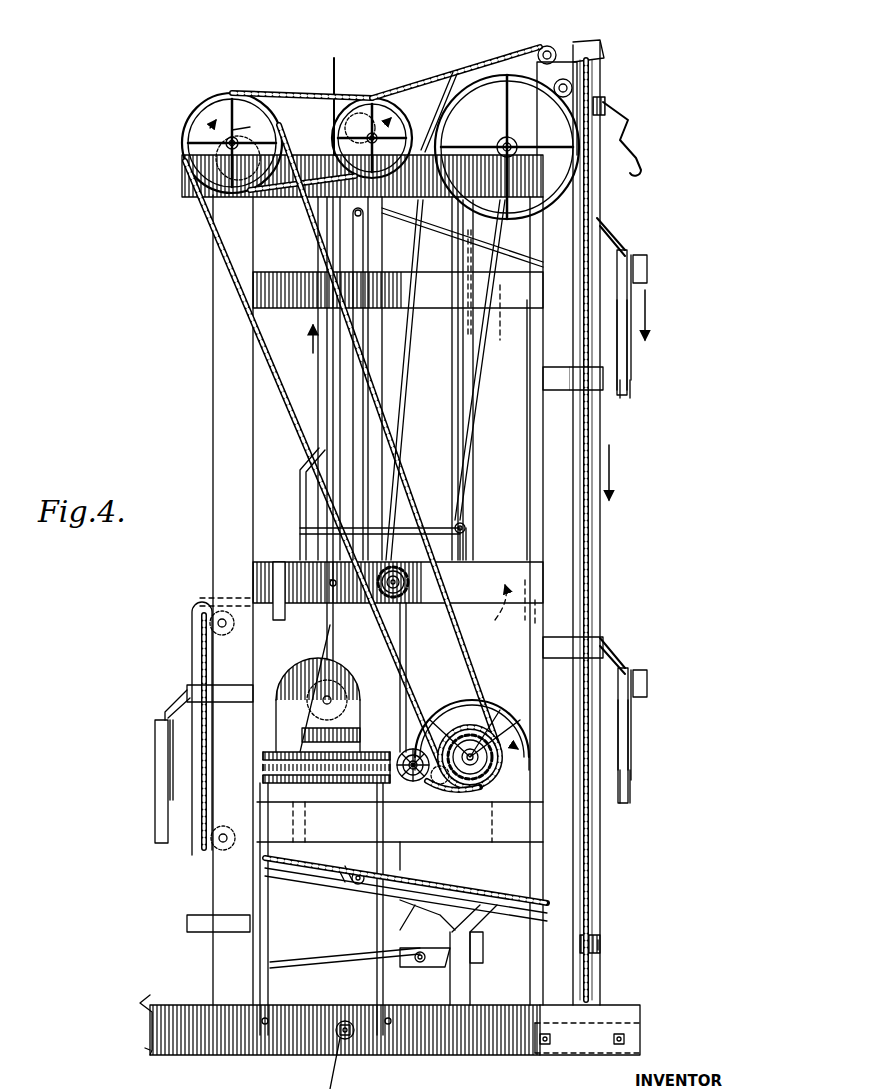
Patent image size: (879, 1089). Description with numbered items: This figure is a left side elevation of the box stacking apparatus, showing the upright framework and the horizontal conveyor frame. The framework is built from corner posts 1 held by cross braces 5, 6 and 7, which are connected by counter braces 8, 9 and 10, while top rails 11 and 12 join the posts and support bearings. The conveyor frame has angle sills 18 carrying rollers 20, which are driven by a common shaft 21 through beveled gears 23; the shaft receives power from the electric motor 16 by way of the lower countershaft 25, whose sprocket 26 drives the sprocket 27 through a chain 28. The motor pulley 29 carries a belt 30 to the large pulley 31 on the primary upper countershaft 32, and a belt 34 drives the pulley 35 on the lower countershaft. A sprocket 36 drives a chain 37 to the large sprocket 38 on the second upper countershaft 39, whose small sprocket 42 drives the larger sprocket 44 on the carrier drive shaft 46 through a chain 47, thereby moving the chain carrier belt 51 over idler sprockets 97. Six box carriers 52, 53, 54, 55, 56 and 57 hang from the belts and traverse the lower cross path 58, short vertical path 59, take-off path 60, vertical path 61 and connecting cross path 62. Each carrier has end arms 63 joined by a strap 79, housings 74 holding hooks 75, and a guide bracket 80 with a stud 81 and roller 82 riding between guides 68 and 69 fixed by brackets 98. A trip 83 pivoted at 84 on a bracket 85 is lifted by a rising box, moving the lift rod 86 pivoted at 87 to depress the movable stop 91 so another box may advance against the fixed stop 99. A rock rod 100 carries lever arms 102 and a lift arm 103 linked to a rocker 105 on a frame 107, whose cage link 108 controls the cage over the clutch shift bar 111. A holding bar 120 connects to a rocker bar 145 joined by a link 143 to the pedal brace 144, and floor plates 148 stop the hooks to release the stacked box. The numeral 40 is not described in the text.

The corner post 1 is at (215, 540).
The cross brace 5 is at (442, 843).
The cross brace 6 is at (503, 608).
The cross brace 7 is at (490, 312).
The counter brace 8 is at (398, 969).
The counter brace 9 is at (519, 620).
The counter brace 10 is at (458, 314).
The top rail 11 is at (190, 196).
The top rail 12 is at (351, 878).
The electric motor 16 is at (322, 690).
The angle sill 18 is at (265, 790).
The roller 20 is at (336, 790).
The common shaft 21 is at (352, 800).
The beveled gear 23 is at (378, 790).
The lower countershaft 25 is at (490, 720).
The sprocket 26 is at (490, 782).
The sprocket 27 is at (420, 784).
The chain 28 is at (446, 790).
The pulley 29 is at (263, 748).
The belt 30 is at (388, 376).
The large pulley 31 is at (480, 82).
The primary upper countershaft 32 is at (512, 150).
The belt 34 is at (452, 350).
The pulley 35 is at (482, 700).
The sprocket 36 is at (494, 744).
The chain 37 is at (303, 376).
The large sprocket 38 is at (190, 122).
The second upper countershaft 39 is at (216, 160).
The gear 40 is at (408, 586).
The small sprocket 42 is at (250, 128).
The larger sprocket 44 is at (362, 118).
The carrier drive shaft 46 is at (331, 96).
The chain 47 is at (300, 112).
The chain carrier belt 51 is at (595, 532).
The box carrier 52 is at (630, 258).
The box carrier 53 is at (641, 725).
The box carrier 54 is at (466, 934).
The box carrier 55 is at (168, 720).
The box carrier 56 is at (300, 450).
The box carrier 57 is at (448, 82).
The lower cross path 58 is at (402, 876).
The short vertical path 59 is at (170, 650).
The short horizontal take-off path 60 is at (253, 583).
The vertical path 61 is at (295, 343).
The connecting cross path 62 is at (428, 82).
The end arm 63 is at (608, 232).
The guide 68 is at (325, 398).
The guide 69 is at (328, 424).
The housing 74 is at (628, 306).
The hook 75 is at (632, 374).
The strap 79 is at (648, 270).
The guide bracket 80 is at (636, 298).
The stud 81 is at (420, 963).
The roller 82 is at (398, 964).
The trip 83 is at (446, 526).
The pivot 84 is at (466, 526).
The bracket 85 is at (468, 545).
The lift rod 86 is at (410, 645).
The pivot 87 is at (406, 530).
The movable stop 91 is at (265, 783).
The idler sprocket 97 is at (606, 106).
The bracket 98 is at (602, 392).
The fixed stop 99 is at (310, 700).
The rock rod 100 is at (552, 50).
The lever arm 102 is at (630, 136).
The lift arm 103 is at (590, 52).
The rocker 105 is at (383, 273).
The frame 107 is at (497, 270).
The cage link 108 is at (355, 216).
The clutch shift bar 111 is at (345, 870).
The holding bar 120 is at (378, 906).
The link 143 is at (146, 1010).
The rear connecting brace 144 is at (148, 1048).
The rocker bar 145 is at (318, 945).
The floor plate 148 is at (598, 1023).